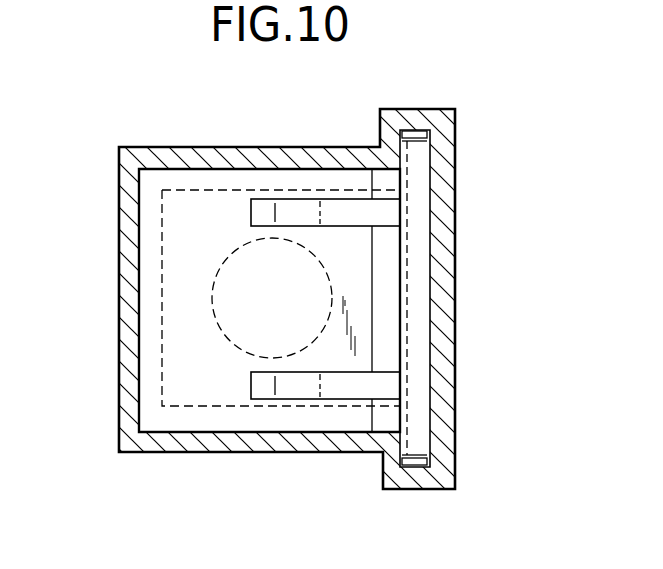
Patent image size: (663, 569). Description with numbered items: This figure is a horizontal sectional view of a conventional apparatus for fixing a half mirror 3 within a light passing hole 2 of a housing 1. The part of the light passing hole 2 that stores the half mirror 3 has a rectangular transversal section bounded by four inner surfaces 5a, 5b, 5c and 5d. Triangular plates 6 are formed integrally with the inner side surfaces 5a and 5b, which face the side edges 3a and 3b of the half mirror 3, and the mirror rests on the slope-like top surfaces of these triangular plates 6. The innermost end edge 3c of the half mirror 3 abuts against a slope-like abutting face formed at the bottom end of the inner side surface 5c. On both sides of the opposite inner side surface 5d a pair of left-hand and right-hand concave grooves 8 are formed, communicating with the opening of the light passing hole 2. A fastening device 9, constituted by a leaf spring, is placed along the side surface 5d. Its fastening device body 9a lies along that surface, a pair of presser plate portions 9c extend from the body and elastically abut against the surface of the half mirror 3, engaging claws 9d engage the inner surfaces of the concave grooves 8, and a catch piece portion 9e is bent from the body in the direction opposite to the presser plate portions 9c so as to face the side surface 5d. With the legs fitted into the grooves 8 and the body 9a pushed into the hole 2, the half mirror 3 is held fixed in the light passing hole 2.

The housing 1 is at (119, 193).
The light passing hole 2 is at (187, 283).
The half mirror 3 is at (192, 352).
The side edge 3a is at (322, 163).
The side edge 3b is at (333, 445).
The innermost end edge 3c is at (119, 406).
The inner side surface 5a is at (252, 166).
The inner side surface 5b is at (270, 430).
The inner side surface 5c is at (141, 311).
The inner side surface 5d is at (428, 293).
The triangular plate 6 is at (200, 188).
The concave groove 8 is at (400, 153).
The fastening device 9 is at (390, 274).
The fastening device body 9a is at (400, 340).
The presser plate portion 9c is at (251, 210).
The engaging claw 9d is at (419, 131).
The catch piece portion 9e is at (420, 244).